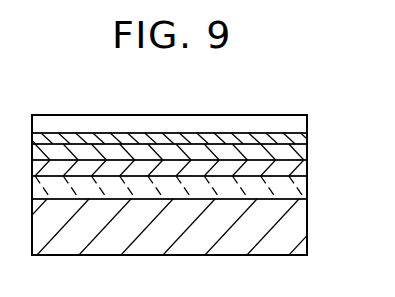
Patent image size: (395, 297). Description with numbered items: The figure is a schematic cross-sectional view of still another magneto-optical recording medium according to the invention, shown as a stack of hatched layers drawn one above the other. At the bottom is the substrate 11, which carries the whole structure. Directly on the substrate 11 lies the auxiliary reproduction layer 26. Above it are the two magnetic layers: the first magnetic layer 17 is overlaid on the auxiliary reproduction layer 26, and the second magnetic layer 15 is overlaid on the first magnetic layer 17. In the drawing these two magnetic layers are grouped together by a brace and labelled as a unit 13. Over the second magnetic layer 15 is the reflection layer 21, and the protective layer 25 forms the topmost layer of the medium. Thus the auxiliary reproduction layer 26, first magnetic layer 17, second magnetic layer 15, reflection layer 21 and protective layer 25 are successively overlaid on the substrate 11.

The substrate 11 is at (308, 247).
The recording layer 13 is at (193, 162).
The second magnetic layer 15 is at (308, 150).
The first magnetic layer 17 is at (308, 172).
The reflection layer 21 is at (308, 140).
The protective layer 25 is at (308, 122).
The auxiliary reproduction layer 26 is at (308, 188).